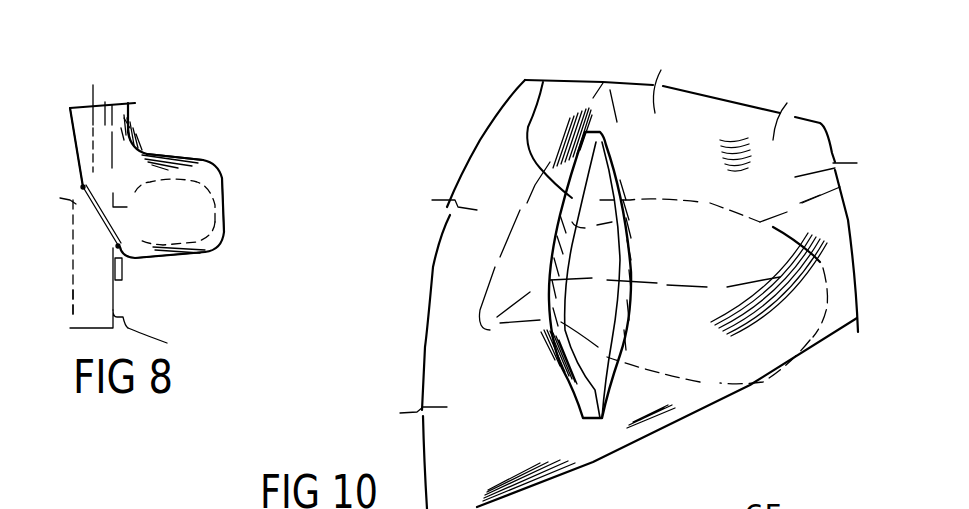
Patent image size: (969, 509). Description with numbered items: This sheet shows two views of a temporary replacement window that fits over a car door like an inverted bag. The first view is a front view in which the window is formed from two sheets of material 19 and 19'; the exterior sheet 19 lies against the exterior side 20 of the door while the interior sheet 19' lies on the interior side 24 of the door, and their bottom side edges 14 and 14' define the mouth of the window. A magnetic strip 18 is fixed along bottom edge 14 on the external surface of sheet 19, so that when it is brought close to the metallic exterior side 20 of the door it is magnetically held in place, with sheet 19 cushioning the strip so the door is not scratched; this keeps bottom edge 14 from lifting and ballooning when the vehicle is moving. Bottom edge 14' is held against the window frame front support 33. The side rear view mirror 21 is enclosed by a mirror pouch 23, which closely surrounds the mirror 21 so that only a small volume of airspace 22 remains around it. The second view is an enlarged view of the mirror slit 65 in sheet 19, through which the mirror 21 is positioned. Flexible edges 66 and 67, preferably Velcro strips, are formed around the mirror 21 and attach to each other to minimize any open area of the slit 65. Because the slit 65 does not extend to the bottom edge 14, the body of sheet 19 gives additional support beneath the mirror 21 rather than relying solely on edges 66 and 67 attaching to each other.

In FIG. 8, the bottom side edge 14 is at (141, 272).
In FIG. 10, the bottom side edge 14 is at (667, 412).
In FIG. 8, the bottom side edge 14' is at (77, 193).
In FIG. 8, the magnetic strip 18 is at (122, 270).
In FIG. 8, the sheet of material 19 is at (155, 122).
In FIG. 10, the sheet of material 19 is at (604, 289).
In FIG. 8, the sheet of material 19' is at (84, 109).
In FIG. 8, the exterior side of the door 20 is at (167, 343).
In FIG. 8, the side rear view mirror 21 is at (210, 160).
In FIG. 10, the side rear view mirror 21 is at (720, 227).
In FIG. 8, the airspace 22 is at (213, 248).
In FIG. 8, the mirror pouch 23 is at (225, 195).
In FIG. 8, the interior side of the door 24 is at (72, 328).
In FIG. 8, the window frame front support 33 is at (110, 140).
In FIG. 8, the mirror slit 65 is at (145, 158).
In FIG. 10, the mirror slit 65 is at (600, 207).
In FIG. 10, the slit edge 66 is at (600, 173).
In FIG. 10, the slit edge 67 is at (543, 82).